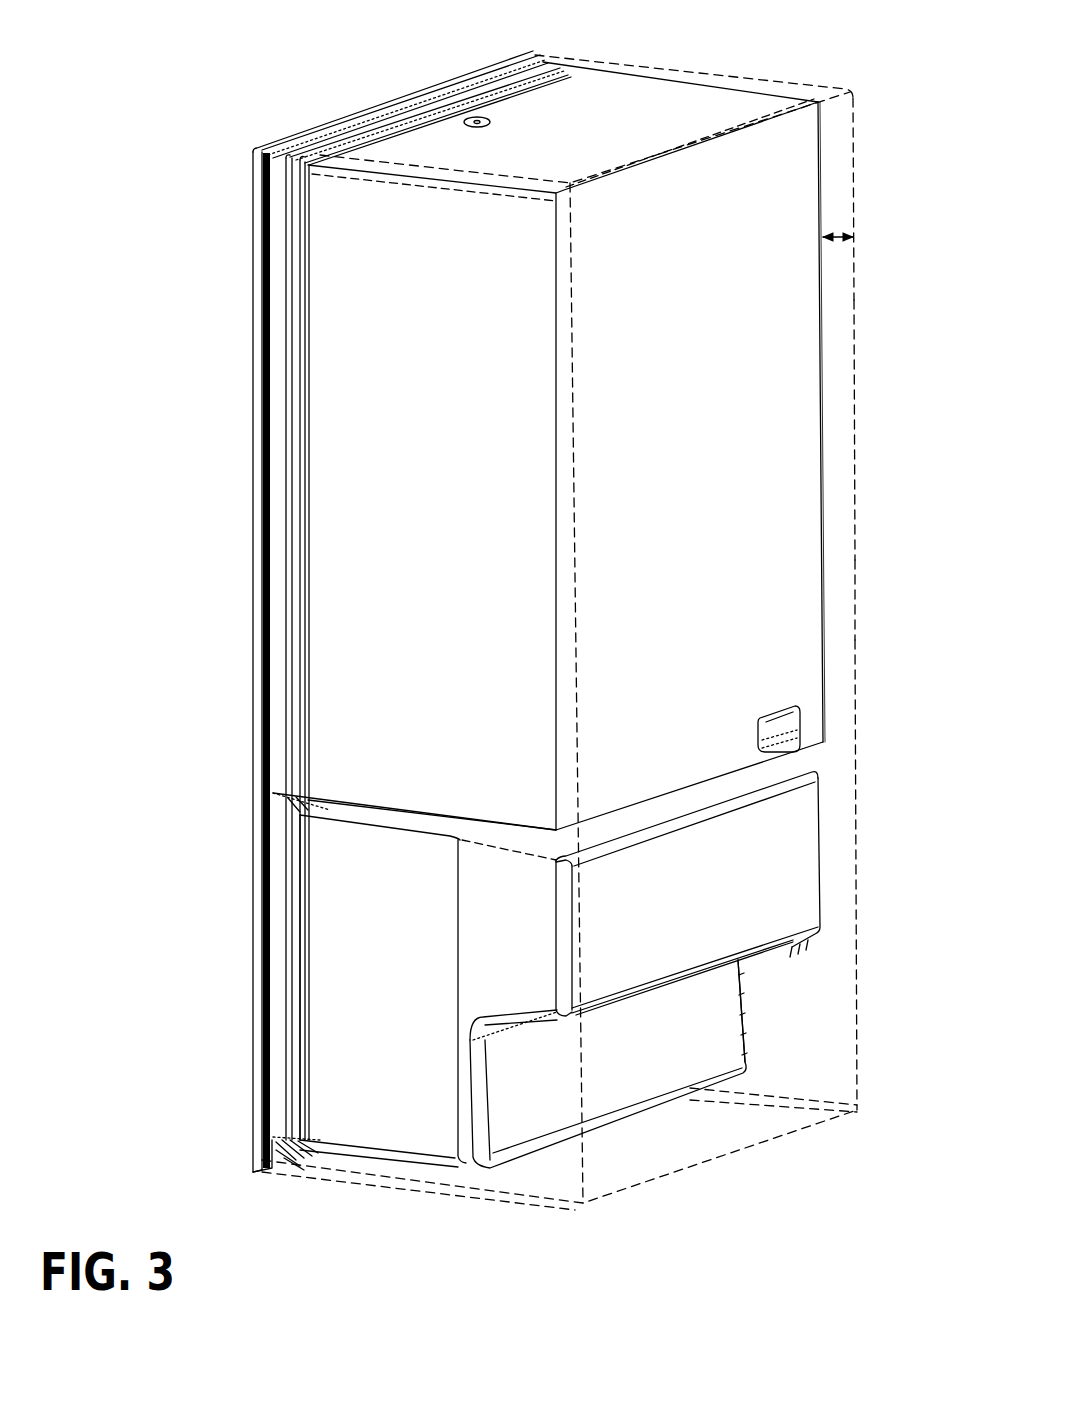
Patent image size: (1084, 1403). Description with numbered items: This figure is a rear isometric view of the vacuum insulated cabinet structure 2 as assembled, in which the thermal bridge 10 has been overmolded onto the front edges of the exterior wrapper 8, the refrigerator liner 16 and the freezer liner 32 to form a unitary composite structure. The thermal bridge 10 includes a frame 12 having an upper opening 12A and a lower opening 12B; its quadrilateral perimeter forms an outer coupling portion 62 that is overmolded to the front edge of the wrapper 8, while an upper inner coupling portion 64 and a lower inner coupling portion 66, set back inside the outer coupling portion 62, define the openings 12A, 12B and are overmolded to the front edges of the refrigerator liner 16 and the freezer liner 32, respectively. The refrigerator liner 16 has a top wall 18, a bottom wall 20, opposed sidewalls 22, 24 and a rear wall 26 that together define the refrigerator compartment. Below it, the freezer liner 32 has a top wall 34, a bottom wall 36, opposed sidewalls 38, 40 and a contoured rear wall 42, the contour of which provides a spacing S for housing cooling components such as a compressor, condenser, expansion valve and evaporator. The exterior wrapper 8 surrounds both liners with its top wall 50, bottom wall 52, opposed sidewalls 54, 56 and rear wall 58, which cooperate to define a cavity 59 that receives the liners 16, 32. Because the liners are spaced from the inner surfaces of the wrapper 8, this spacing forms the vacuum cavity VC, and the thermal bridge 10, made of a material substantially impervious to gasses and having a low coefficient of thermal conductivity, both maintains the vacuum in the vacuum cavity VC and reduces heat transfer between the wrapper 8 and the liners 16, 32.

The vacuum insulated cabinet structure 2 is at (195, 125).
The exterior wrapper 8 is at (862, 545).
The thermal bridge 10 is at (190, 460).
The frame 12 is at (224, 592).
The upper opening 12A is at (280, 673).
The lower opening 12B is at (275, 878).
The refrigerator liner 16 is at (360, 522).
The top wall 18 is at (440, 133).
The bottom wall 20 is at (773, 770).
The sidewall 22 is at (822, 345).
The sidewall 24 is at (375, 298).
The rear wall 26 is at (750, 398).
The freezer liner 32 is at (355, 948).
The top wall 34 is at (792, 752).
The bottom wall 36 is at (667, 1103).
The sidewall 38 is at (822, 840).
The sidewall 40 is at (360, 1073).
The rear wall 42 is at (768, 865).
The top wall 50 is at (668, 55).
The bottom wall 52 is at (650, 1177).
The sidewall 54 is at (857, 643).
The sidewall 56 is at (400, 1105).
The rear wall 58 is at (833, 598).
The cavity 59 is at (833, 158).
The outer coupling portion 62 is at (262, 263).
The upper inner coupling portion 64 is at (300, 383).
The lower inner coupling portion 66 is at (300, 1018).
The vacuum cavity VC is at (838, 236).
The spacing S is at (686, 1000).